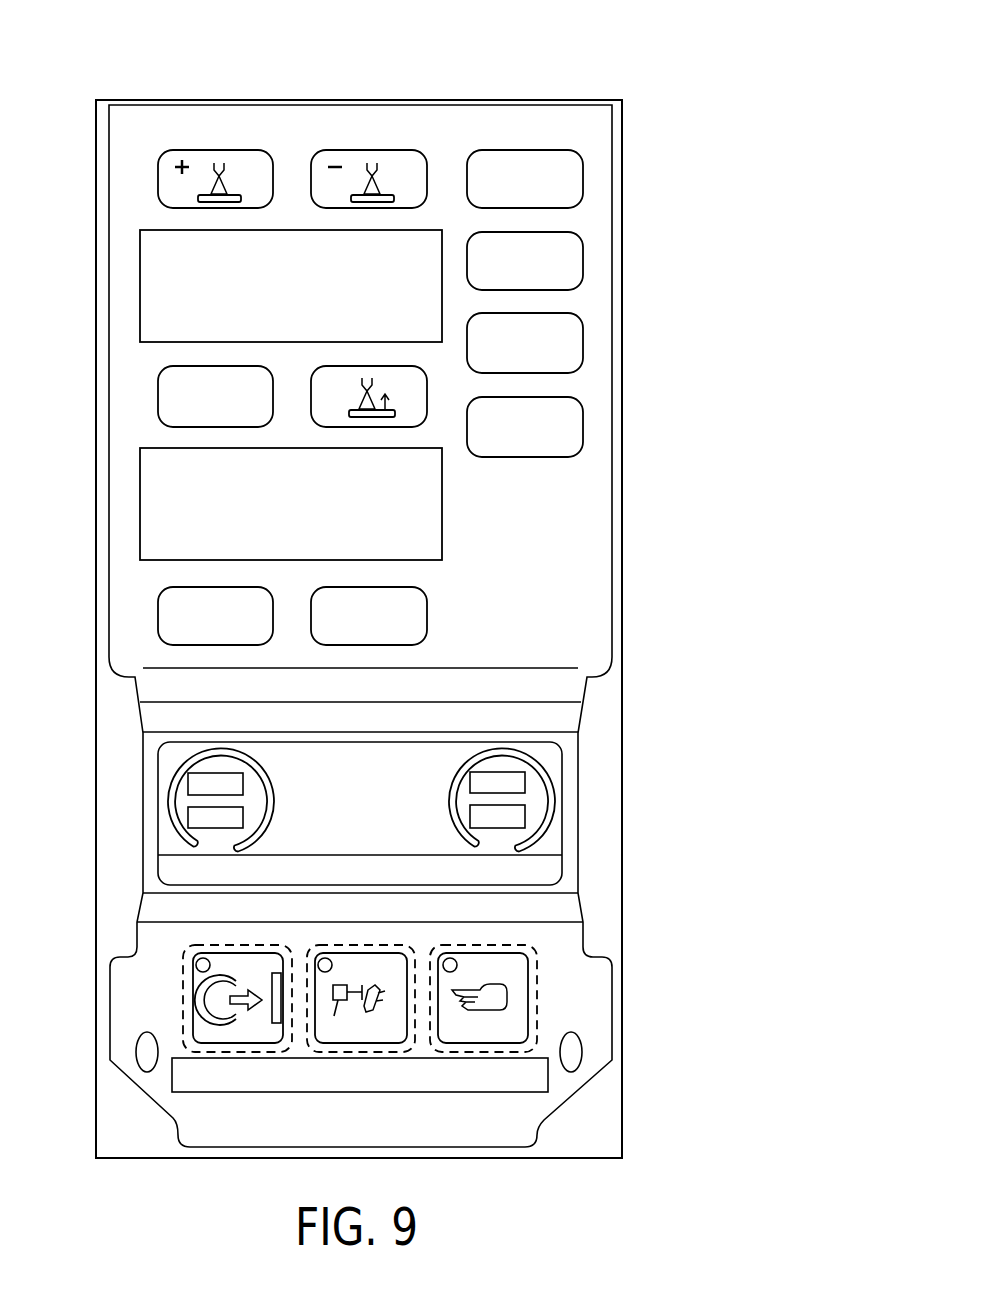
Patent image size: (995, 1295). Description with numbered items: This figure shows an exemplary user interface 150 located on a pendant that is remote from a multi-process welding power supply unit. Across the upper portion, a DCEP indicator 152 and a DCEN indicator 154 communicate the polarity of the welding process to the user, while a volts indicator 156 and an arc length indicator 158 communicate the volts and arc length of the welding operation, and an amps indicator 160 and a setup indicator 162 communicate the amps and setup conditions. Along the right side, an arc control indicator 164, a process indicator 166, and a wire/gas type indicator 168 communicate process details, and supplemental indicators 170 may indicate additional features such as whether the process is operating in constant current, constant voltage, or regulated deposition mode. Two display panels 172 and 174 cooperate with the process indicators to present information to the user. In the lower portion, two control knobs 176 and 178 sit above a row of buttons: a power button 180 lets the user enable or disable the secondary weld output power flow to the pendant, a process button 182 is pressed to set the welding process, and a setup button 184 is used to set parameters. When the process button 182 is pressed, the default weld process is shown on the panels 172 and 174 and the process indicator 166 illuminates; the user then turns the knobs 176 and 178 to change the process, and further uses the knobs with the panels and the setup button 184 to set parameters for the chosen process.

The user interface 150 is at (575, 45).
The DCEP indicator 152 is at (196, 150).
The DCEN indicator 154 is at (351, 150).
The volts indicator 156 is at (187, 366).
The arc length indicator 158 is at (350, 366).
The amps indicator 160 is at (218, 586).
The setup indicator 162 is at (427, 618).
The arc control indicator 164 is at (583, 180).
The process indicator 166 is at (583, 262).
The wire/gas type indicator 168 is at (583, 345).
The supplemental indicators 170 is at (522, 448).
The display panel 172 is at (148, 279).
The display panel 174 is at (435, 535).
The control knob 176 is at (272, 800).
The control knob 178 is at (458, 832).
The power button 180 is at (183, 1000).
The process button 182 is at (408, 1047).
The setup button 184 is at (538, 1002).